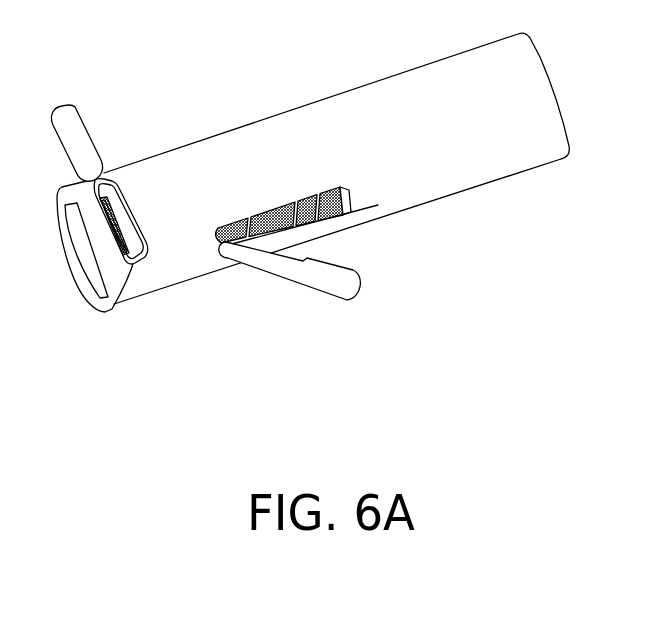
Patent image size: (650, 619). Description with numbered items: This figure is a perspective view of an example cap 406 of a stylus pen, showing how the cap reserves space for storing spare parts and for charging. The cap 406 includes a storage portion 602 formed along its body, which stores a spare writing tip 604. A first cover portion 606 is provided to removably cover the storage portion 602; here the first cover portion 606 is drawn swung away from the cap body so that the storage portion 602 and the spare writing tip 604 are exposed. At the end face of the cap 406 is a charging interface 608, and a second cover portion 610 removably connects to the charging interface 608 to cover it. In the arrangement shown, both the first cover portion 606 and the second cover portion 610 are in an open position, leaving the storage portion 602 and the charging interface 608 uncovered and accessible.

The cap 406 is at (487, 181).
The storage portion 602 is at (347, 212).
The spare writing tip 604 is at (320, 210).
The first cover portion 606 is at (313, 289).
The charging interface 608 is at (134, 264).
The second cover portion 610 is at (78, 107).